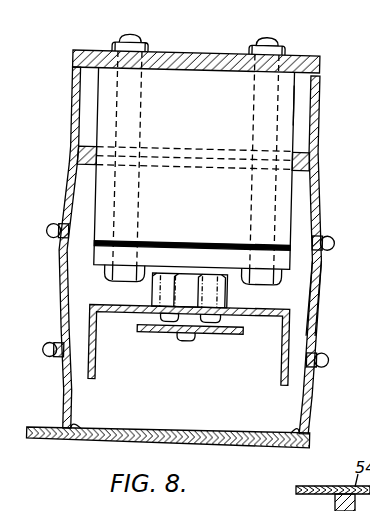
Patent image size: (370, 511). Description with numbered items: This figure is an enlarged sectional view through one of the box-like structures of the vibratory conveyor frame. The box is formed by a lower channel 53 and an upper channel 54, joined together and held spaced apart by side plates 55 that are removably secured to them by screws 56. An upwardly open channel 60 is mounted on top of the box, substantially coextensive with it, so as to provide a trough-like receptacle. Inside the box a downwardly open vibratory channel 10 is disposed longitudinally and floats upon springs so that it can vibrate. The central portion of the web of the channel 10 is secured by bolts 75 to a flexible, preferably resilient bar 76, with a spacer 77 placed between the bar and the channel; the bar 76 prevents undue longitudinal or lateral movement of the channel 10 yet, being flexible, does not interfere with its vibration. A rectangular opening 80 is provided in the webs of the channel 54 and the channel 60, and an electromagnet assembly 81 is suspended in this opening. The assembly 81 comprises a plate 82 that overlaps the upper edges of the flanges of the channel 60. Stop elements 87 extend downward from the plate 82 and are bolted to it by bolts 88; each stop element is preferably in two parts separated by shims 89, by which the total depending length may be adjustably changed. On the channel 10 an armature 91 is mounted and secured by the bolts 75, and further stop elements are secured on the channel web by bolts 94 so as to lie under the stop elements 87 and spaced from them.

The vibratory channel 10 is at (261, 311).
The lower channel 53 is at (312, 401).
The upper channel 54 is at (317, 201).
The side plates 55 is at (324, 297).
The screws 56 is at (330, 241).
The upwardly open channel 60 is at (320, 125).
The bolts 75 is at (186, 343).
The flexible bar 76 is at (151, 334).
The spacer 77 is at (150, 321).
The rectangular opening 80 is at (313, 163).
The electromagnet assembly 81 is at (282, 90).
The plate 82 is at (319, 68).
The stop elements 87 is at (283, 112).
The bolts 88 is at (135, 37).
The shims 89 is at (160, 245).
The armature 91 is at (223, 299).
The bolts 94 is at (152, 292).